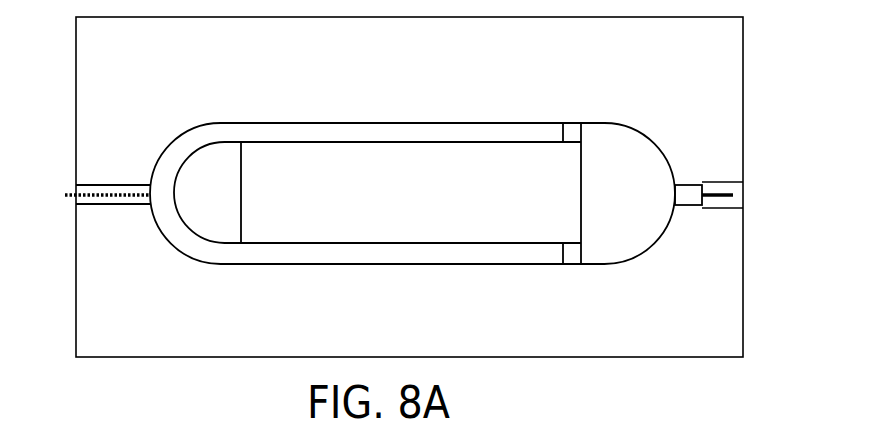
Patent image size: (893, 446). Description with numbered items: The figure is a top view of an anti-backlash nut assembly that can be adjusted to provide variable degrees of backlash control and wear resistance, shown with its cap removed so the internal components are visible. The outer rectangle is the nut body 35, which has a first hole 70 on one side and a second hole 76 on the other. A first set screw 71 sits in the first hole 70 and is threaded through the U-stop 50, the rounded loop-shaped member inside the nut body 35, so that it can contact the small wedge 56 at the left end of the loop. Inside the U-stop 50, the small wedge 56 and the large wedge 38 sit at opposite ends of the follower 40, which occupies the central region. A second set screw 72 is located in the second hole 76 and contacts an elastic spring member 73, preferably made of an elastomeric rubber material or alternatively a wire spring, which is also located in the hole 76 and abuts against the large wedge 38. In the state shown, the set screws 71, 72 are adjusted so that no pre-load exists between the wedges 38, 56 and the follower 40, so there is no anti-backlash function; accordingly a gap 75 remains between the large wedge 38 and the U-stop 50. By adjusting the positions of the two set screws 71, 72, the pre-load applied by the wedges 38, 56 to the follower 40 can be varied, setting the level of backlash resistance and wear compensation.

The nut body 35 is at (673, 72).
The U-stop 50 is at (203, 135).
The small wedge 56 is at (198, 209).
The follower 40 is at (411, 208).
The gap 75 is at (571, 135).
The large wedge 38 is at (611, 209).
The first set screw 71 is at (108, 193).
The first hole 70 is at (72, 190).
The elastic spring member 73 is at (686, 183).
The second set screw 72 is at (722, 207).
The second hole 76 is at (745, 188).